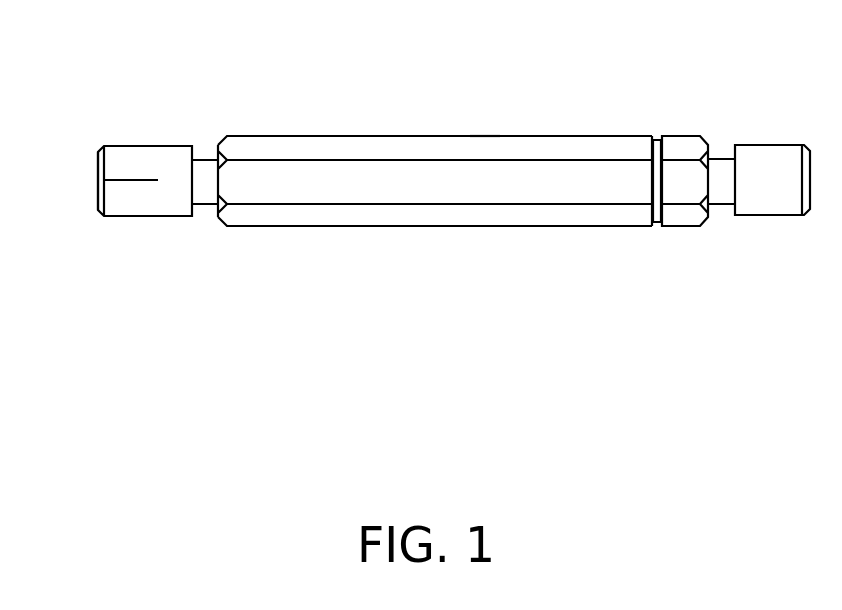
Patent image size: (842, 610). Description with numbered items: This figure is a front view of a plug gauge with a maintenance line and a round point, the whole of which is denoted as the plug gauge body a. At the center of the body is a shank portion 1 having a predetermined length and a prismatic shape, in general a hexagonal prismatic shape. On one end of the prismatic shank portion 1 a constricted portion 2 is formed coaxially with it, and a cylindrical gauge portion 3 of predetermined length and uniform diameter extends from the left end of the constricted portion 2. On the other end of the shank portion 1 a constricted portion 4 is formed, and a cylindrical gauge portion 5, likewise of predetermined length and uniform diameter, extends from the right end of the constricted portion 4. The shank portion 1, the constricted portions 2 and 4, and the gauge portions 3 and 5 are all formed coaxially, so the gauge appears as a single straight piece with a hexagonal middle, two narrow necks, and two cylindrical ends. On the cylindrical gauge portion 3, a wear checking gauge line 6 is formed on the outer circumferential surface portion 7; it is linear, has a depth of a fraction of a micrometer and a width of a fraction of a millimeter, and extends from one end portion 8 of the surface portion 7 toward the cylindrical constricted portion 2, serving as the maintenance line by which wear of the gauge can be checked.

The shank portion 1 is at (471, 184).
The constricted portion 2 is at (208, 188).
The cylindrical gauge portion 3 is at (168, 199).
The constricted portion 4 is at (730, 197).
The cylindrical gauge portion 5 is at (789, 198).
The wear checking gauge line 6 is at (139, 180).
The outer circumferential surface portion 7 is at (143, 167).
The end portion 8 is at (98, 170).
The plug gauge body a is at (492, 104).